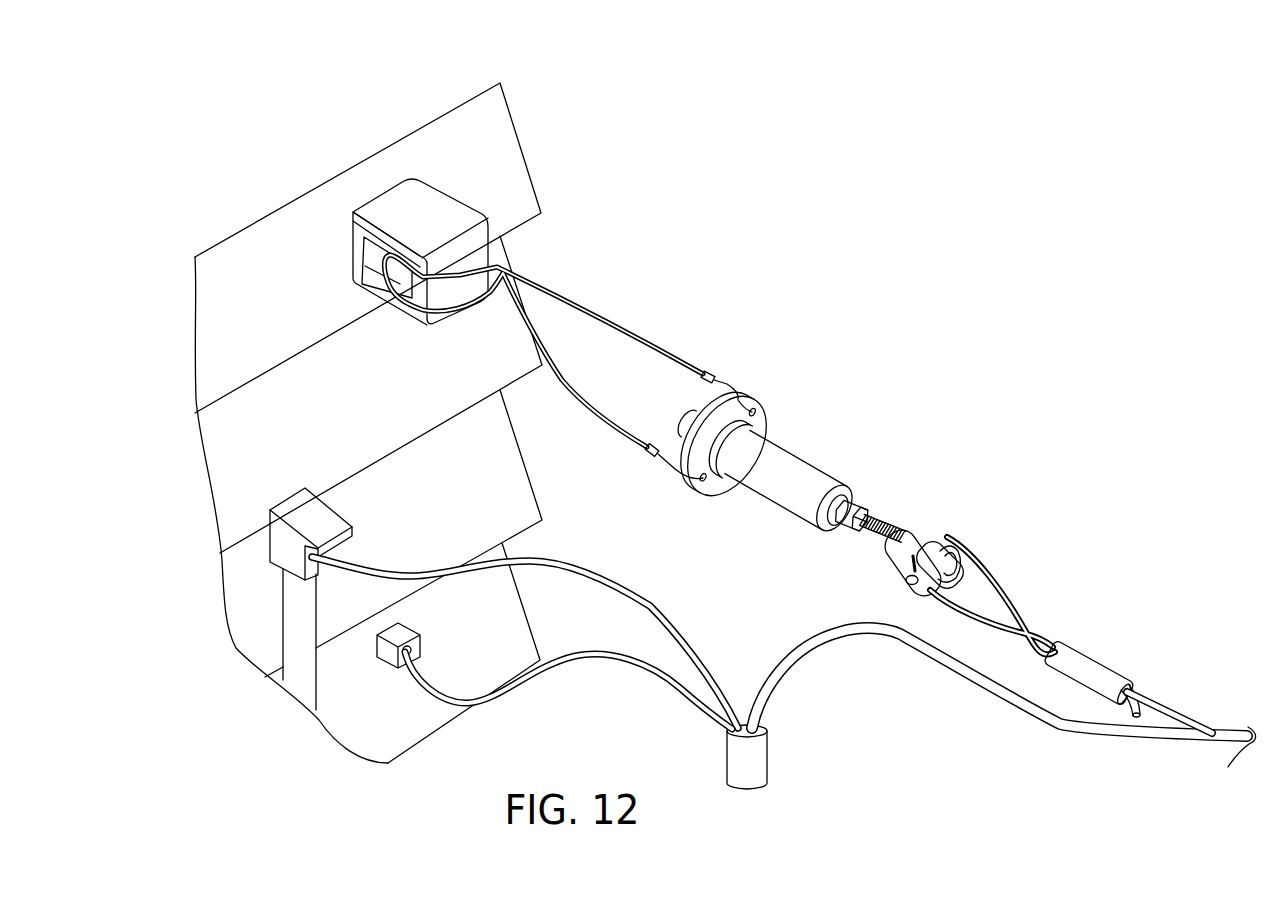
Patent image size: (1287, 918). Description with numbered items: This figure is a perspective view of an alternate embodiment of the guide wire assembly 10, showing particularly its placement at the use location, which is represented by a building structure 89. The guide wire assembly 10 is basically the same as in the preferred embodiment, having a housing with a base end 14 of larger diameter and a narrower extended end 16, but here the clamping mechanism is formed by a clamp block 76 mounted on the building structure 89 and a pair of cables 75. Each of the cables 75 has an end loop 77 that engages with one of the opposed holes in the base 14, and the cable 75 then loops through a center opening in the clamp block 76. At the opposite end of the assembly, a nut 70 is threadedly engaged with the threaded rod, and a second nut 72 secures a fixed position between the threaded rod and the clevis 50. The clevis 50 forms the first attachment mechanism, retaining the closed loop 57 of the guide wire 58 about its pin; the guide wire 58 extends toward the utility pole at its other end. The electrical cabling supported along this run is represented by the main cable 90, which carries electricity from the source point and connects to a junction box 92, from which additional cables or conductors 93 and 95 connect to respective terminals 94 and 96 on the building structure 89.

The guide wire assembly 10 is at (842, 468).
The base end 14 is at (755, 423).
The extended end 16 is at (773, 487).
The clevis arrangement 50 is at (935, 527).
The closed loop 57 is at (1002, 580).
The guide wire 58 is at (1163, 703).
The nut 70 is at (858, 503).
The nut 72 is at (893, 543).
The cables 75 is at (613, 322).
The clamp block 76 is at (400, 195).
The end loop 77 is at (752, 403).
The building structure 89 is at (522, 480).
The cable 90 is at (985, 675).
The junction box 92 is at (762, 753).
The cable 93 is at (602, 572).
The terminal 94 is at (293, 533).
The cable 95 is at (575, 663).
The terminal 96 is at (387, 658).